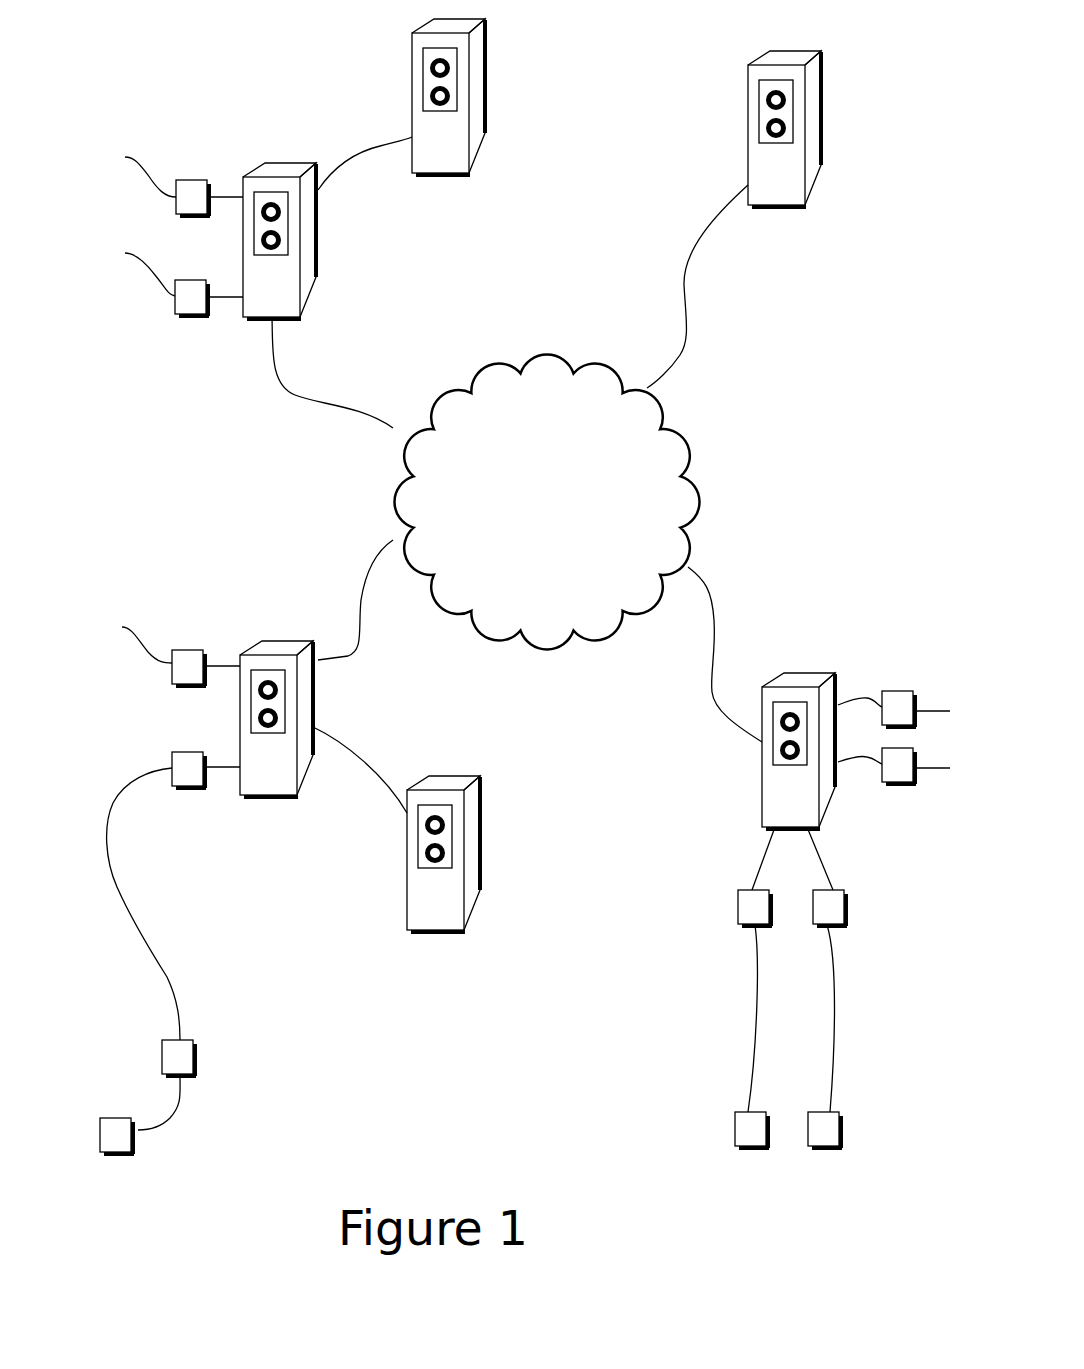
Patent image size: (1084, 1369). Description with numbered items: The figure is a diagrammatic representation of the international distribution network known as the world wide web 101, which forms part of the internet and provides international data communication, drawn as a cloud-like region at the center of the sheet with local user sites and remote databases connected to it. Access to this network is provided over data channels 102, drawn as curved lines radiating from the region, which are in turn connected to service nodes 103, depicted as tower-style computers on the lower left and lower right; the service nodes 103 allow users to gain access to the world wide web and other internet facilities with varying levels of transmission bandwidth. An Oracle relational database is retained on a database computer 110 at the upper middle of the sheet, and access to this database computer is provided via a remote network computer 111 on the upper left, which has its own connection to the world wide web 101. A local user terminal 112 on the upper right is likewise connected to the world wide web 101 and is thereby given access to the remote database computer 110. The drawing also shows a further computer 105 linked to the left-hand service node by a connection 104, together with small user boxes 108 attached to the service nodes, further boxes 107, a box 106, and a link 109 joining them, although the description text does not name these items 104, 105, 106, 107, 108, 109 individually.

The world wide web 101 is at (688, 456).
The data channels 102 is at (353, 160).
The service nodes 103 is at (280, 646).
The connection between servers 104 is at (365, 770).
The server computer 105 is at (448, 783).
The client computer 106 is at (130, 1160).
The client computer 107 is at (190, 1063).
The client computer 108 is at (185, 770).
The connection 109 is at (167, 977).
The database computer 110 is at (482, 80).
The remote network computer 111 is at (283, 172).
The local user terminal 112 is at (752, 122).